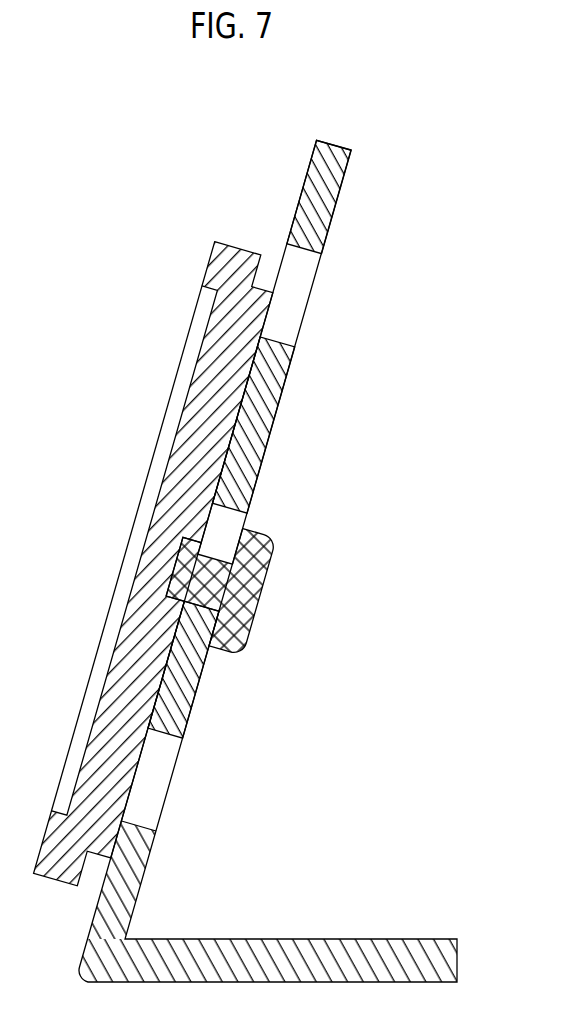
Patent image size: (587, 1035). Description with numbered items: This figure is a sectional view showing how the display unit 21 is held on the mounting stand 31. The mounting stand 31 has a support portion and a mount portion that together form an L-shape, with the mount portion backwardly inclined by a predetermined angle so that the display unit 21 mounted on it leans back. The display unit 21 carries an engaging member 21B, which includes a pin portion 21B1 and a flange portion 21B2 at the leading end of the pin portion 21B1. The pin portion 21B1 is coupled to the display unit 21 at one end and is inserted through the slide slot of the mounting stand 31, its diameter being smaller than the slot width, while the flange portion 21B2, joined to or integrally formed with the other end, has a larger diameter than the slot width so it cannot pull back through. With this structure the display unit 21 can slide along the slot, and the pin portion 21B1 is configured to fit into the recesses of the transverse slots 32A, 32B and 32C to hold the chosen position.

The display unit 21 is at (238, 253).
The engaging member 21B is at (280, 618).
The pin portion 21B1 is at (210, 552).
The flange portion 21B2 is at (262, 547).
The mounting stand 31 is at (338, 141).
The transverse slot 32A is at (300, 280).
The transverse slot 32B is at (230, 523).
The transverse slot 32C is at (152, 787).